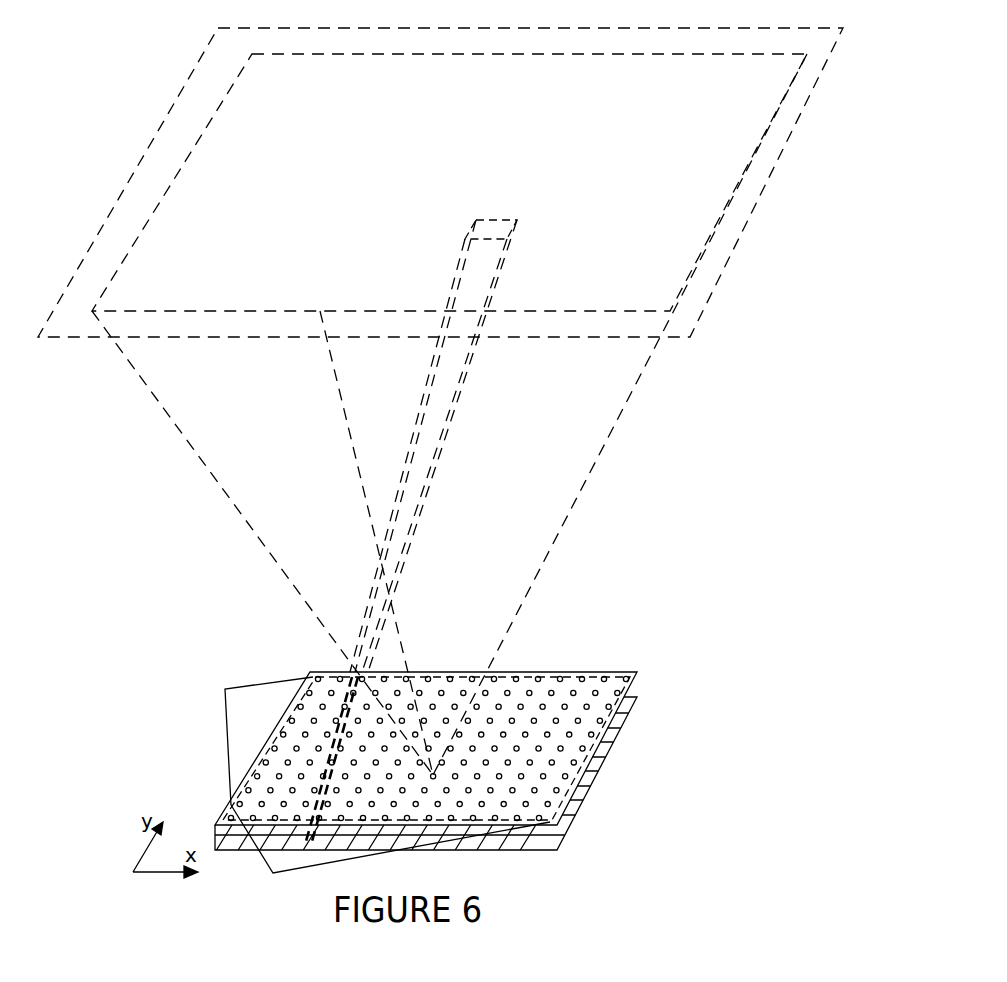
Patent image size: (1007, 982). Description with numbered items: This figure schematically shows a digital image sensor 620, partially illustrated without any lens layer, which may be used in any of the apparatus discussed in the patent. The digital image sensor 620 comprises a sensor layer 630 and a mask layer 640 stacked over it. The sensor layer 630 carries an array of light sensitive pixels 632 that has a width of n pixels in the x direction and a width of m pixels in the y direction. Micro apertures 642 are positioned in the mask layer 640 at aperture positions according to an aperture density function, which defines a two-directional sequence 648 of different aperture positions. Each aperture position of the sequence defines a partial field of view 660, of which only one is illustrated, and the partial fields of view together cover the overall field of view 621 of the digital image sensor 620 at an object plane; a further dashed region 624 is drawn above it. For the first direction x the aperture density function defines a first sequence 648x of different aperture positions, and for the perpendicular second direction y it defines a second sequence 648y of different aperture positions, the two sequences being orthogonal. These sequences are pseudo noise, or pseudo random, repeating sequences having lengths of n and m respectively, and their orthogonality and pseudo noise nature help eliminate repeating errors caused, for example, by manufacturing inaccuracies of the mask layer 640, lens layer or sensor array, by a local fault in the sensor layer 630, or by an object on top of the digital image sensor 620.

The outer field of view region 624 is at (168, 120).
The overall field of view 621 is at (603, 447).
The partial field of view 660 is at (445, 433).
The digital image sensor 620 is at (279, 657).
The mask layer 640 is at (646, 693).
The micro apertures 642 is at (610, 672).
The two-directional sequence of different aperture positions 648 is at (548, 675).
The second sequence of different aperture positions 648y is at (234, 741).
The first sequence of different aperture positions 648x is at (390, 860).
The sensor layer 630 is at (598, 827).
The array of light sensitive pixels 632 is at (577, 798).